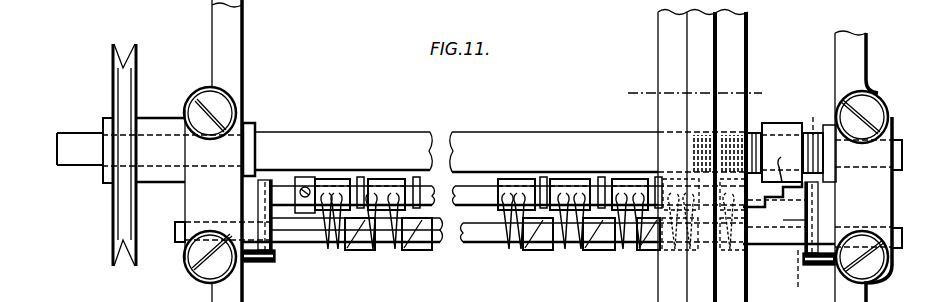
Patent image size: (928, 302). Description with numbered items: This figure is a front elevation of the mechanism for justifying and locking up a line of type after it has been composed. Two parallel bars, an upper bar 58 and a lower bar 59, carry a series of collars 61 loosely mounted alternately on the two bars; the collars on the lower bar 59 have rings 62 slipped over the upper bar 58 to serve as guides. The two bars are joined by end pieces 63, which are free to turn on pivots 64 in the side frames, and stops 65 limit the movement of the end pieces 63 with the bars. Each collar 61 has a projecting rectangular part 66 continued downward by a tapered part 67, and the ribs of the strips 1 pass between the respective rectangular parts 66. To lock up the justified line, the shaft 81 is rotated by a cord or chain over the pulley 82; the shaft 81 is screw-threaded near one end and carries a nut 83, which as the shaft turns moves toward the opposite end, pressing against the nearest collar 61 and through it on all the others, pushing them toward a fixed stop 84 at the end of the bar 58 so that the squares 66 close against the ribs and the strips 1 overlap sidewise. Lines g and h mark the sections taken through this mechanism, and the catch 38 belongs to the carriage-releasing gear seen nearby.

The strip 1 is at (703, 156).
The catch 38 is at (276, 192).
The upper bar 58 is at (510, 194).
The lower bar 59 is at (304, 236).
The collar 61 is at (348, 243).
The ring 62 is at (422, 189).
The end piece 63 is at (258, 207).
The pivot 64 is at (175, 232).
The stop 65 is at (255, 263).
The projecting rectangular part 66 is at (430, 221).
The tapered part 67 is at (383, 245).
The shaft 81 is at (495, 149).
The pulley 82 is at (136, 59).
The nut 83 is at (775, 146).
The fixed stop 84 is at (308, 187).
The section line g g is at (806, 200).
The section line h h is at (702, 83).